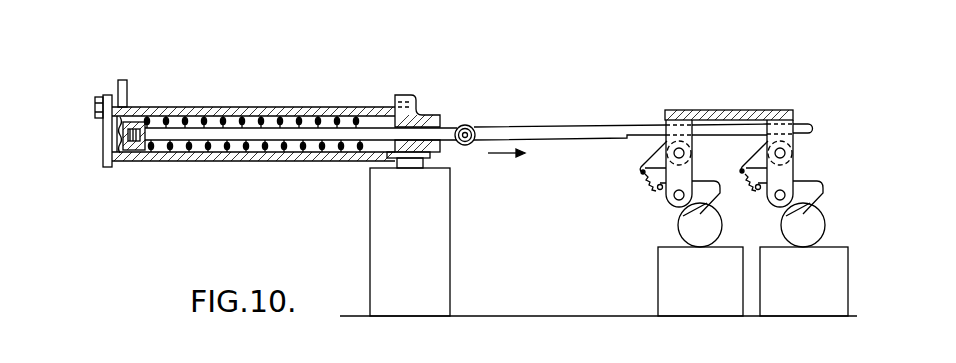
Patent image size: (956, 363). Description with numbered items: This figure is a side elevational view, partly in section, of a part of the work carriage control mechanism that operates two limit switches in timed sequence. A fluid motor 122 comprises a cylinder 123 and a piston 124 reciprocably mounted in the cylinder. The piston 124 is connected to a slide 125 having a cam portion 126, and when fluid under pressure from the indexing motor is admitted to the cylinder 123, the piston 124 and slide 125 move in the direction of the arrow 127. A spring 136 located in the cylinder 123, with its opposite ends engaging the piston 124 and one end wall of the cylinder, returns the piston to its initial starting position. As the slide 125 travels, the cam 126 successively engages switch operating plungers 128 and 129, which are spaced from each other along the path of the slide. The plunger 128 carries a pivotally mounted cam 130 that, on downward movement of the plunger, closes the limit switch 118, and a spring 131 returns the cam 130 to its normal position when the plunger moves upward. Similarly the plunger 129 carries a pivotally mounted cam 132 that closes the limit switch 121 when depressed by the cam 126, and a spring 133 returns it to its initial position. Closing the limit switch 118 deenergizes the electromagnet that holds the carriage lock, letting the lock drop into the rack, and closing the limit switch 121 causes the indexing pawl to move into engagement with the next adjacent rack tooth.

The limit switch 118 is at (693, 305).
The limit switch 121 is at (792, 305).
The fluid motor 122 is at (290, 104).
The cylinder 123 is at (225, 161).
The piston 124 is at (140, 151).
The slide 125 is at (535, 133).
The cam portion 126 is at (643, 137).
The arrow 127 is at (502, 153).
The switch operating plunger 128 is at (693, 152).
The switch operating plunger 129 is at (797, 150).
The pivotally mounted cam 130 is at (703, 188).
The spring 131 is at (638, 181).
The pivotally mounted cam 132 is at (805, 187).
The spring 133 is at (741, 172).
The spring 136 is at (248, 121).